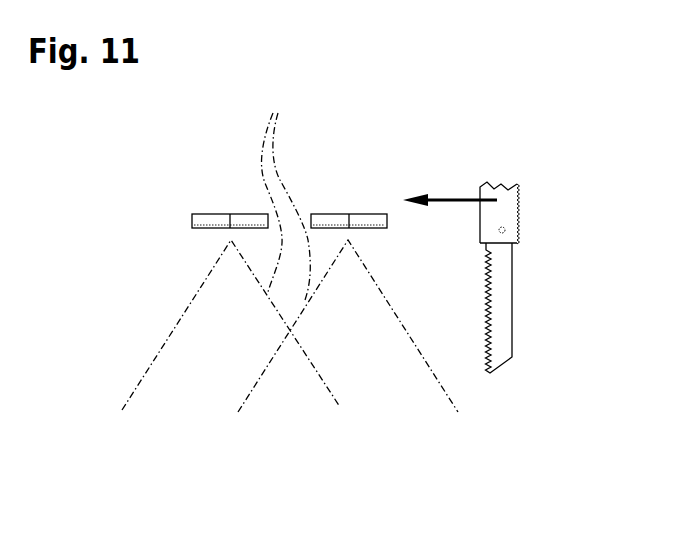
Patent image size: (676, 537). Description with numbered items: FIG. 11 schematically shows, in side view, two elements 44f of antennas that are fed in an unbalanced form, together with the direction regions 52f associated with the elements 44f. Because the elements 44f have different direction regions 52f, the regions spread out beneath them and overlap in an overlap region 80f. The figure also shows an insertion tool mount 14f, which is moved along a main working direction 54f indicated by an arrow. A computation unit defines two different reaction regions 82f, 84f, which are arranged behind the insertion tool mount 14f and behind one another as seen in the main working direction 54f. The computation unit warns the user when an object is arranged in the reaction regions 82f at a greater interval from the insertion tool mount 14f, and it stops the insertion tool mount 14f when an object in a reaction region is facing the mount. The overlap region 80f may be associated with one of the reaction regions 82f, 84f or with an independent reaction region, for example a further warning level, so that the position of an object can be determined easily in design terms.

The element 44f is at (213, 221).
The direction region 52f is at (283, 191).
The main working direction 54f is at (455, 197).
The insertion tool mount 14f is at (525, 190).
The reaction region 82f is at (194, 420).
The overlap region 80f is at (292, 420).
The reaction region 84f is at (394, 422).